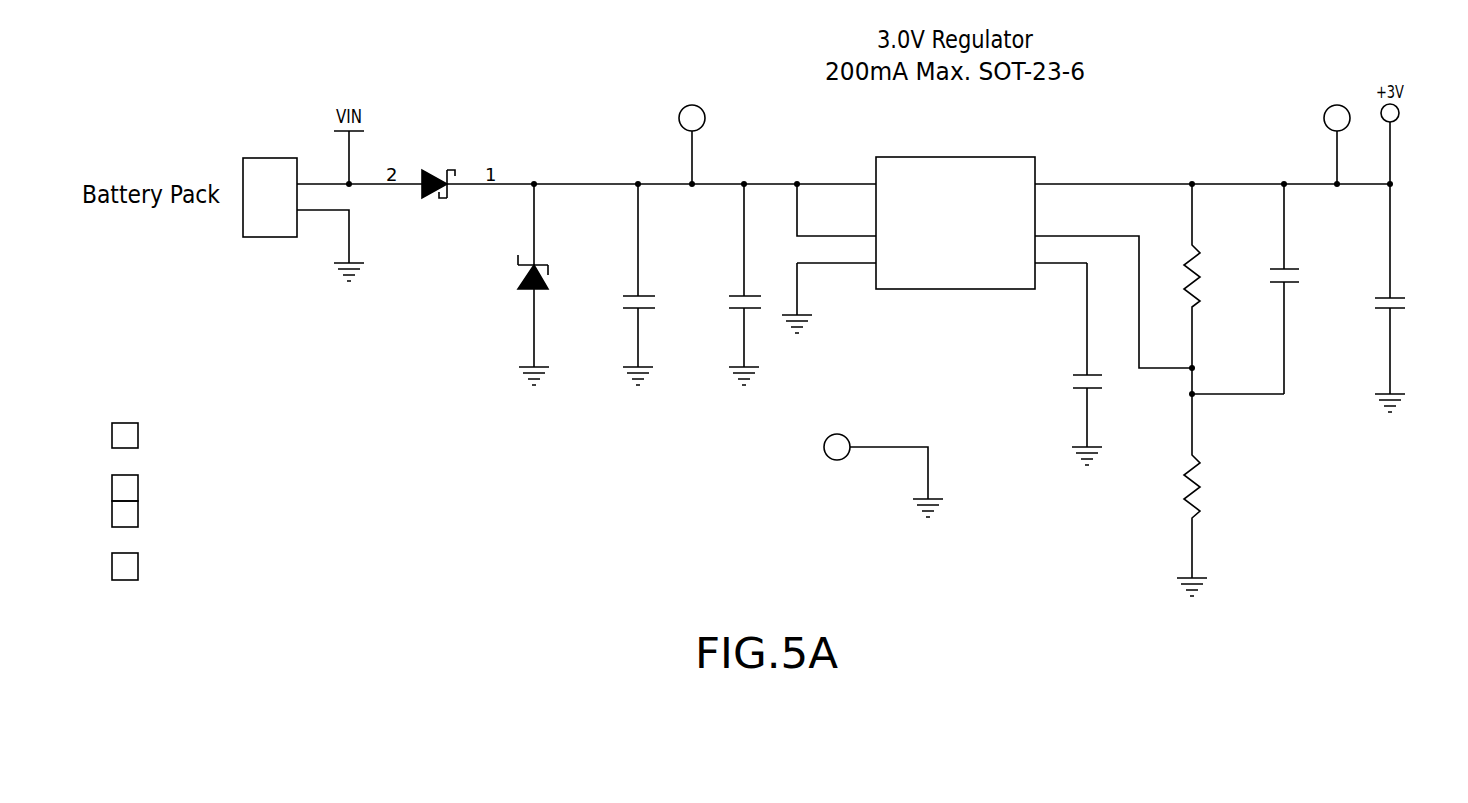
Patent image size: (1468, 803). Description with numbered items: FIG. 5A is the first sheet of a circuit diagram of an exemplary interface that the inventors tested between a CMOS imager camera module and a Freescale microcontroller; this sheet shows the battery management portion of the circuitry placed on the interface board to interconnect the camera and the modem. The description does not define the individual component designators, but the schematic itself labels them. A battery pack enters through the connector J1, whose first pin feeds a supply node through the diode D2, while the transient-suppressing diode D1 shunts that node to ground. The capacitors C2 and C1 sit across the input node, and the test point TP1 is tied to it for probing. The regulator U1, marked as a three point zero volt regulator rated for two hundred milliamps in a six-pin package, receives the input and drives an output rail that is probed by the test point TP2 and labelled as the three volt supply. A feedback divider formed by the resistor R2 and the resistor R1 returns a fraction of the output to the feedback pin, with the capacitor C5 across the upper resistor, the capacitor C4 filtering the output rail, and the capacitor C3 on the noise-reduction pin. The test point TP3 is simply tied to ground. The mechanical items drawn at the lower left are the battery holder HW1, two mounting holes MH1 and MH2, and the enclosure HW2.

The battery pack connector CON2 J1 is at (270, 196).
The Schottky diode 1N5819HW D2 is at (433, 152).
The TVS diode SMBJ5.0A D1 is at (490, 284).
The capacitor 1uF 25V C2 is at (609, 284).
The capacitor 100nF C1 is at (715, 284).
The test point 1 TP1 is at (692, 131).
The 3.0V regulator TPS79301 U1 is at (957, 198).
The test point 2 TP2 is at (1337, 132).
The resistor 43K2 R2 is at (1214, 276).
The resistor 30K1 R1 is at (1211, 482).
The capacitor 18pF C5 is at (1309, 289).
The capacitor 10uF 6.3V C4 is at (1414, 298).
The capacitor 10nF C3 is at (1059, 364).
The test point 3 TP3 is at (866, 475).
The battery holder HW1 is at (190, 435).
The mounting hole 1 MH1 is at (147, 488).
The mounting hole 2 MH2 is at (147, 514).
The enclosure HW2 is at (167, 568).